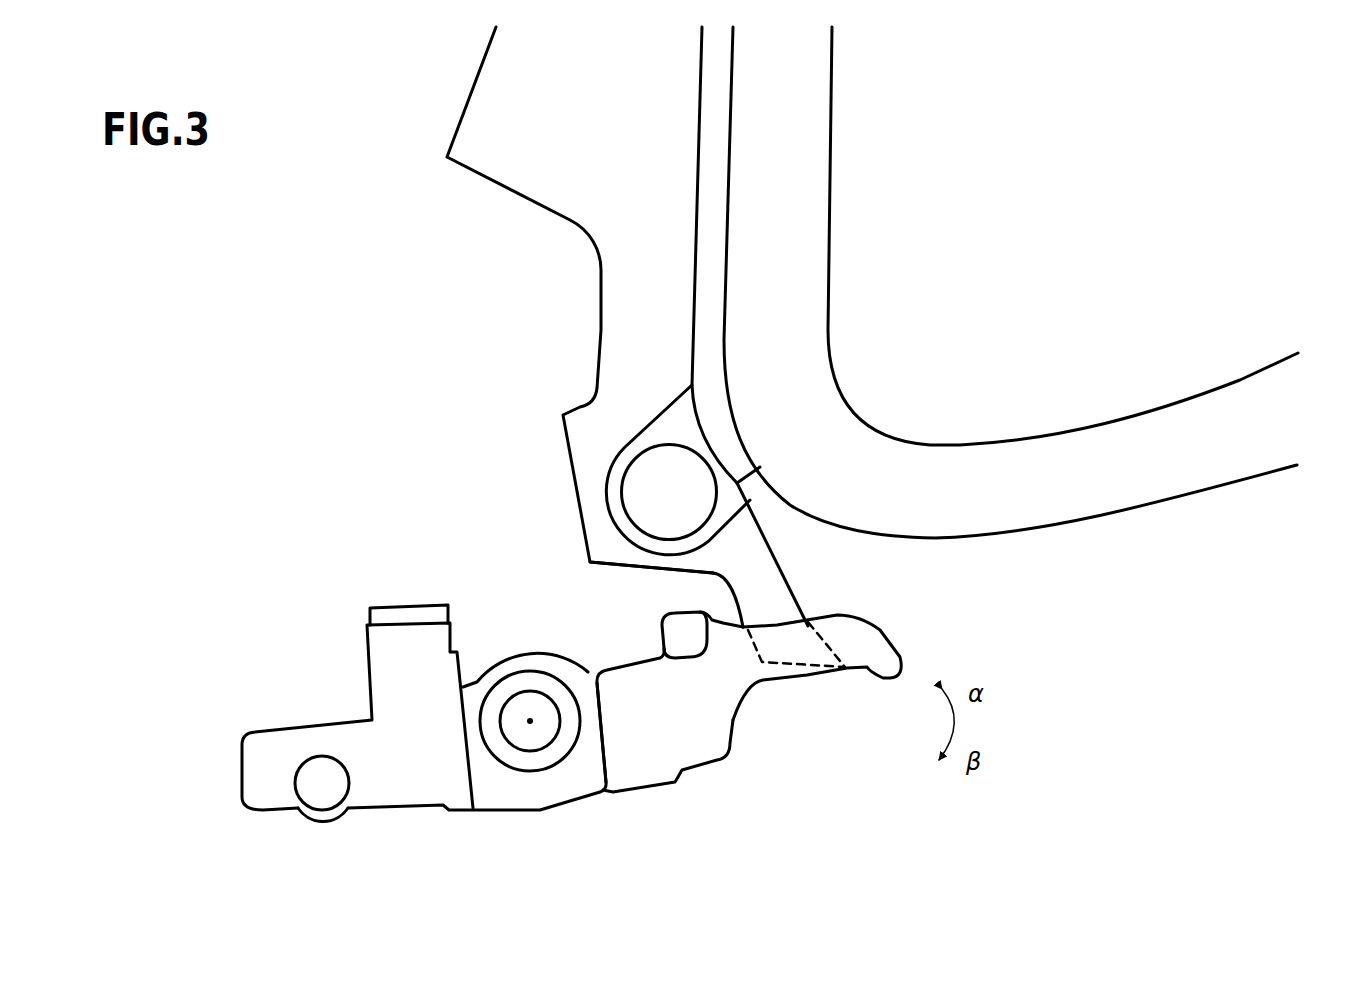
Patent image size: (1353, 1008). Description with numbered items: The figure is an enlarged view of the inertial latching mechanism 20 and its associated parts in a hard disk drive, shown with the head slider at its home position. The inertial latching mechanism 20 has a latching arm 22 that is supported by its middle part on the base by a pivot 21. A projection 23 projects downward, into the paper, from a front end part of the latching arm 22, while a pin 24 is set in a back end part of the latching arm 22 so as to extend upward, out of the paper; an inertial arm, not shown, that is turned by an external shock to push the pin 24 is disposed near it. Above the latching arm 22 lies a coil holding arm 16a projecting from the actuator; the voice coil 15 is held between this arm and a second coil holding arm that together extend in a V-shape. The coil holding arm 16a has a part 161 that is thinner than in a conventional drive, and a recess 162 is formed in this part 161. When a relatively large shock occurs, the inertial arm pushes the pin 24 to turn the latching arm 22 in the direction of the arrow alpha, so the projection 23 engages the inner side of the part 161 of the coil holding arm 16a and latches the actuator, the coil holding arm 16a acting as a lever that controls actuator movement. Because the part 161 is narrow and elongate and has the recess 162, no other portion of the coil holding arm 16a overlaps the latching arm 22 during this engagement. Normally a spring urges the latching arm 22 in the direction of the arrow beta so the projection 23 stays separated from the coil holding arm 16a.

The voice coil 15 is at (1158, 478).
The coil holding arm 16a is at (490, 142).
The part 161 is at (768, 603).
The recess 162 is at (646, 591).
The inertial latching mechanism 20 is at (326, 598).
The pivot 21 is at (540, 730).
The latching arm 22 is at (692, 743).
The projection 23 is at (865, 648).
The pin 24 is at (315, 778).